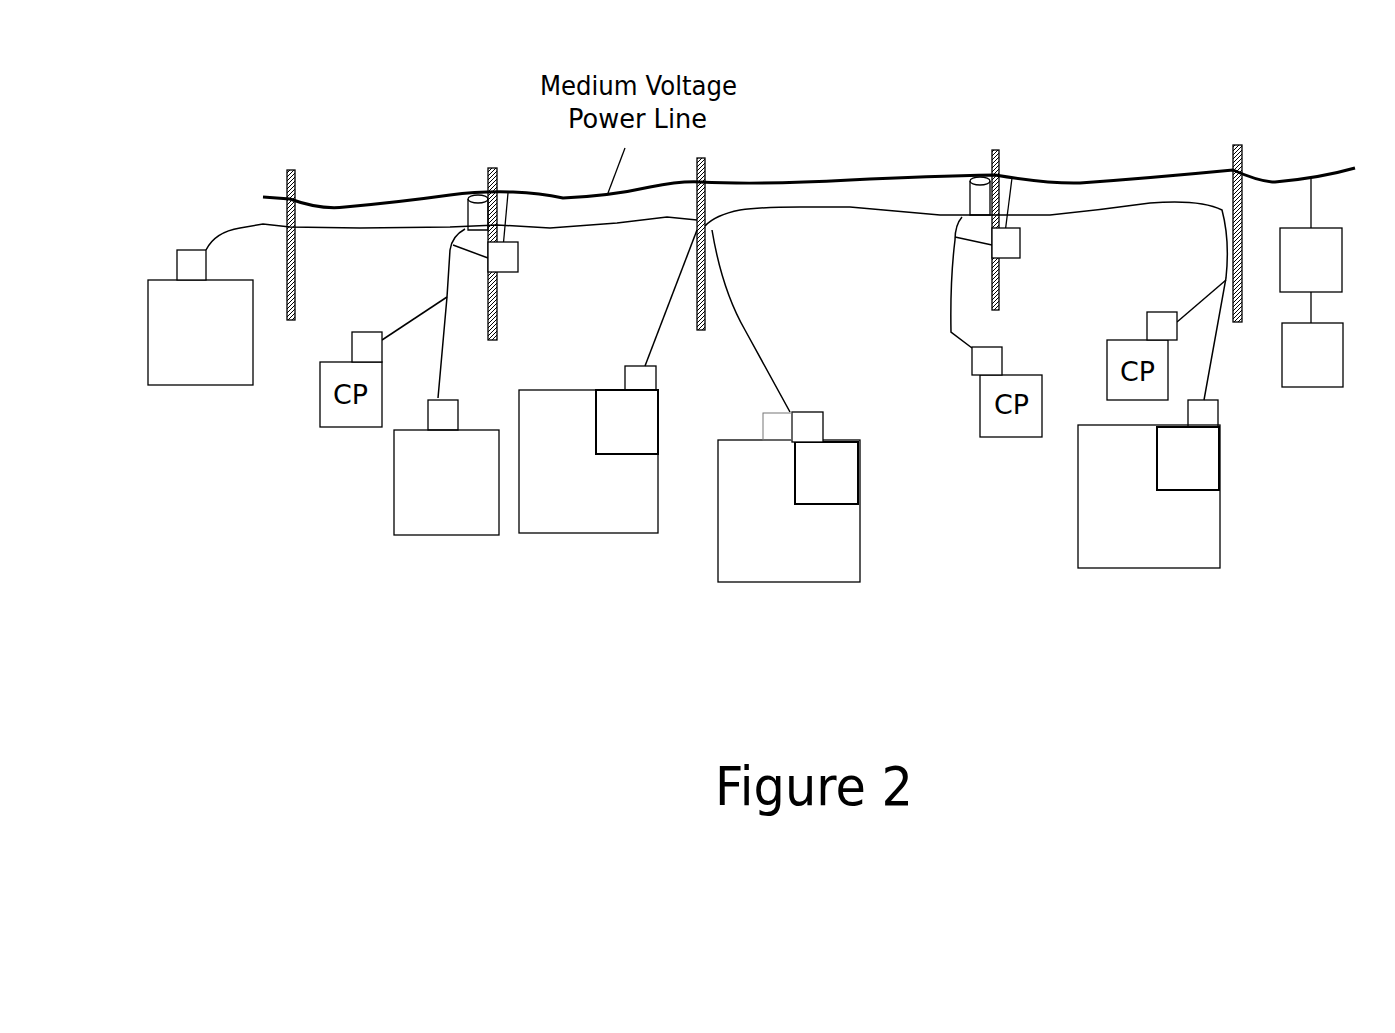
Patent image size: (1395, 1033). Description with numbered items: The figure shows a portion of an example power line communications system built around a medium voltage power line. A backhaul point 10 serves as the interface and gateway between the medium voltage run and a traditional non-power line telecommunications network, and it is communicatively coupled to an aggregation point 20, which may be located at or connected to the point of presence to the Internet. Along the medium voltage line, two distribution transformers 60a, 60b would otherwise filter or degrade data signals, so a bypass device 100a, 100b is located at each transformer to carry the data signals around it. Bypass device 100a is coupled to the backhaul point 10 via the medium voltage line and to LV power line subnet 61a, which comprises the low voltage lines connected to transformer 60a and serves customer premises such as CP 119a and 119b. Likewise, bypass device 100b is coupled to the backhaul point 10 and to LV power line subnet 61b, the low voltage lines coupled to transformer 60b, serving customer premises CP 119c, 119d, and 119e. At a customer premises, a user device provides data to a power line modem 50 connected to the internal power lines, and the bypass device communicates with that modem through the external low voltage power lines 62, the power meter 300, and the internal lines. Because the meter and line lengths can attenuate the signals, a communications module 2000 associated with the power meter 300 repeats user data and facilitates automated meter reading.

The backhaul point 10 is at (1311, 235).
The aggregation point 20 is at (1312, 339).
The power line modem 50 is at (907, 447).
The distribution transformer 60a is at (976, 162).
The distribution transformer 60b is at (476, 188).
The LV power line subnet 61a is at (1013, 557).
The LV power line subnet 61b is at (362, 552).
The external low voltage power lines 62 is at (658, 310).
The bypass device 100a is at (1020, 242).
The bypass device 100b is at (520, 258).
The customer premises 119a is at (1149, 484).
The customer premises 119b is at (789, 511).
The customer premises 119c is at (446, 467).
The customer premises 119d is at (588, 449).
The customer premises 119e is at (200, 332).
The power meter 300 is at (165, 262).
The communications module 2000 is at (758, 428).